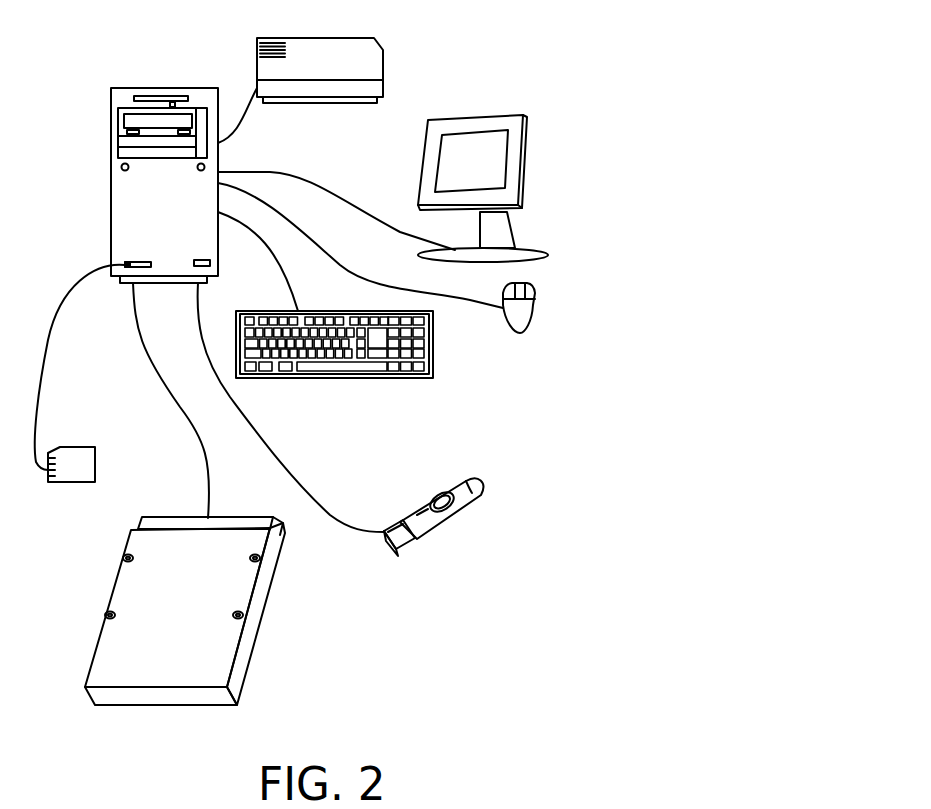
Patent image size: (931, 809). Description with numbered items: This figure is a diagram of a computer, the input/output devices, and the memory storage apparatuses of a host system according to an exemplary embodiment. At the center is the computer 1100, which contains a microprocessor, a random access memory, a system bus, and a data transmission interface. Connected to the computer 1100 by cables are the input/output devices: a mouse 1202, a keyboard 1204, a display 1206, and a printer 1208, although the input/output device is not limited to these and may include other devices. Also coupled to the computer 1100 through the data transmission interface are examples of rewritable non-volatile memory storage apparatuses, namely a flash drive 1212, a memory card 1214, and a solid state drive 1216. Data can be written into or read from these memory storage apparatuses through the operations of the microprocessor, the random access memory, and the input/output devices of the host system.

The computer 1100 is at (164, 88).
The mouse 1202 is at (537, 303).
The keyboard 1204 is at (433, 355).
The display 1206 is at (484, 113).
The printer 1208 is at (316, 38).
The USB flash drive 1212 is at (427, 498).
The memory card 1214 is at (97, 455).
The solid state drive 1216 is at (234, 505).